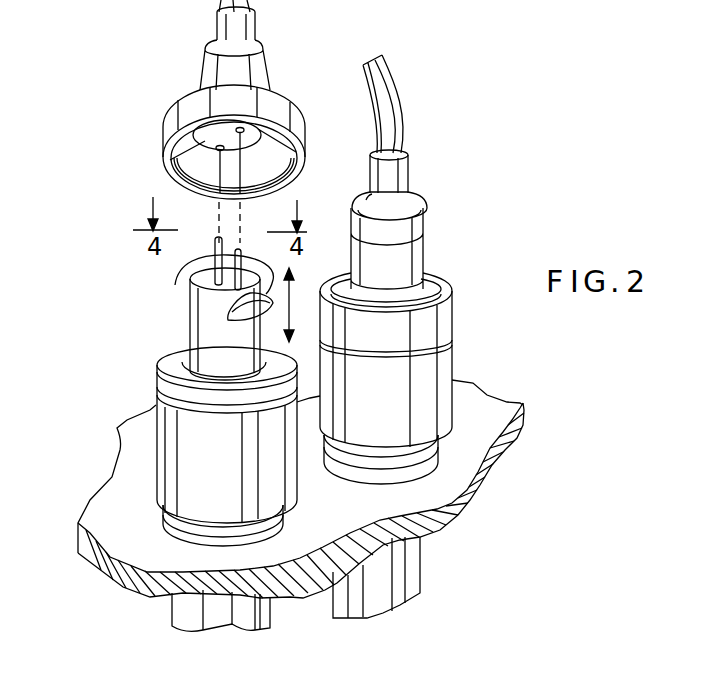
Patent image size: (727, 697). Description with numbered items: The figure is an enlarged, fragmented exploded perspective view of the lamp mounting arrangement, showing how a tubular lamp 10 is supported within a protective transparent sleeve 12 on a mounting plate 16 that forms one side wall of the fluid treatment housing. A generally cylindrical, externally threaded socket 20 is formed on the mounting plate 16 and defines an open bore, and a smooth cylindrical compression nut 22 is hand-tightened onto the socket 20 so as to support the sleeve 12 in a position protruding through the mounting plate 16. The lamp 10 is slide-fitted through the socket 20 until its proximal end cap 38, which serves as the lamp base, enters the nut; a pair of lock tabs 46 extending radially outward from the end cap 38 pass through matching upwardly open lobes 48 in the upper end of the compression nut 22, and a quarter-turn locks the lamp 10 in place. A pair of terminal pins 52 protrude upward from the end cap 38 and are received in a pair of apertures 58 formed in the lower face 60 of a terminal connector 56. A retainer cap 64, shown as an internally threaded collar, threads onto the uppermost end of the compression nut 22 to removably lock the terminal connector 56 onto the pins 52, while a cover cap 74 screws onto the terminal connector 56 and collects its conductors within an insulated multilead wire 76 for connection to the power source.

The tubular lamp 10 is at (126, 298).
The transparent sleeve 12 is at (187, 607).
The mounting plate 16 is at (497, 453).
The threaded socket 20 is at (173, 524).
The compression nut 22 is at (276, 485).
The proximal end cap 38 is at (197, 323).
The lock tabs 46 is at (253, 281).
The lobes 48 is at (178, 349).
The terminal pins 52 is at (193, 267).
The terminal connector 56 is at (412, 262).
The apertures 58 is at (282, 157).
The lower face 60 is at (178, 162).
The retainer cap 64 is at (285, 108).
The cover cap 74 is at (212, 72).
The multilead wire 76 is at (425, 105).